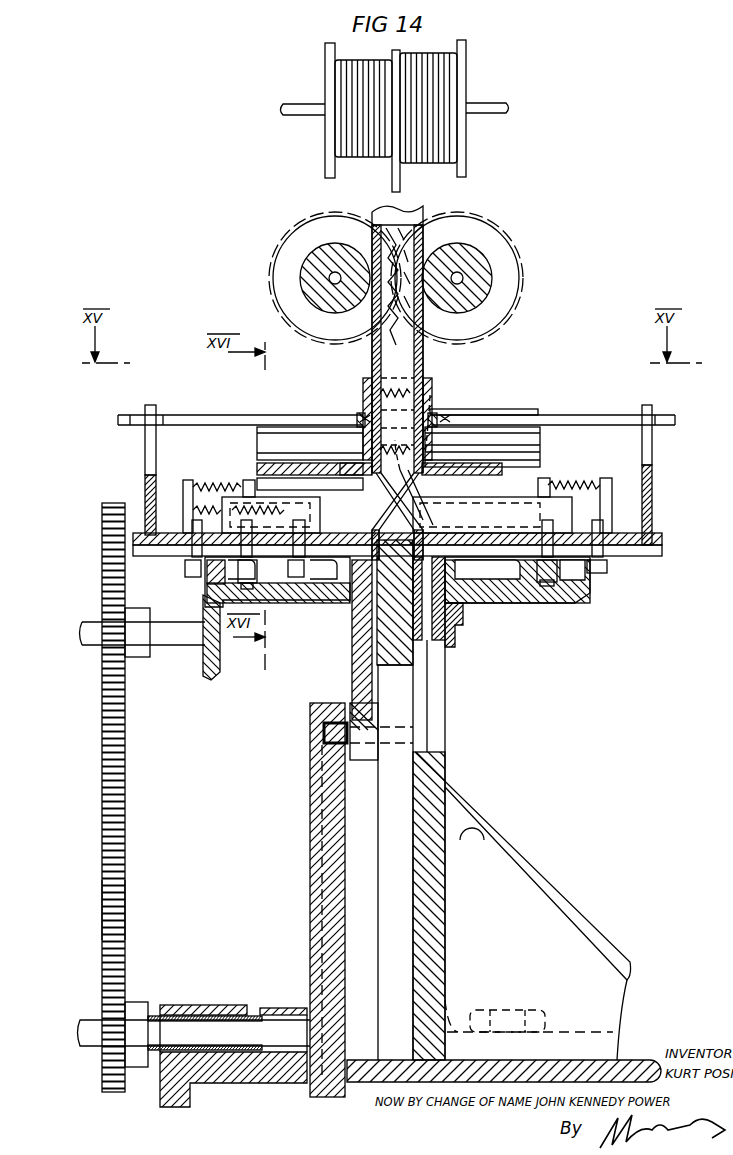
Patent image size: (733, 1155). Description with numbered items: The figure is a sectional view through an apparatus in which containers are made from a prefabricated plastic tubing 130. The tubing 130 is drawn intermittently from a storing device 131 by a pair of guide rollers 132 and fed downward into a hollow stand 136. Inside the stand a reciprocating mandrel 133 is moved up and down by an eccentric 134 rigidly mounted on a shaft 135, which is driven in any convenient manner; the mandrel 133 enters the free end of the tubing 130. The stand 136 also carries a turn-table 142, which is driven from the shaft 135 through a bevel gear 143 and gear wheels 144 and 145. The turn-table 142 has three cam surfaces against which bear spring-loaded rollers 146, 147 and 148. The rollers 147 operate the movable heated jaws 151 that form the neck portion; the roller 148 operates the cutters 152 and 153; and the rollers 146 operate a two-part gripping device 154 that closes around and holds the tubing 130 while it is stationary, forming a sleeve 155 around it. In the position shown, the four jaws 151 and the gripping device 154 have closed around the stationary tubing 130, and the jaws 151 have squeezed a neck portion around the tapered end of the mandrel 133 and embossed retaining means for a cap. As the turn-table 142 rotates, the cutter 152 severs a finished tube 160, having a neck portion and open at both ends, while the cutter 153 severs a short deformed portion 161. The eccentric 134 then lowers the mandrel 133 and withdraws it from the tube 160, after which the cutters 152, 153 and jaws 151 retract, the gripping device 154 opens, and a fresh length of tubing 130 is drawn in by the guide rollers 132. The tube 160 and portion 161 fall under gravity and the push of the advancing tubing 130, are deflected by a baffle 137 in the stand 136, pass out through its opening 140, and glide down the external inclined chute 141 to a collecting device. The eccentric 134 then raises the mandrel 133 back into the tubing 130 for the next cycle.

The prefabricated tubing 130 is at (395, 181).
The storing device 131 is at (464, 70).
The guide rollers 132 is at (326, 268).
The reciprocating mandrel 133 is at (400, 689).
The eccentric 134 is at (312, 848).
The shaft 135 is at (92, 1040).
The hollow stand 136 is at (350, 660).
The baffle 137 is at (324, 731).
The opening 140 is at (435, 732).
The inclined chute 141 is at (528, 870).
The turn-table 142 is at (515, 585).
The bevel gear 143 is at (215, 578).
The gear wheel 144 is at (104, 733).
The gear wheel 145 is at (101, 908).
The rollers 146 is at (196, 562).
The rollers 147 is at (212, 590).
The roller 148 is at (305, 572).
The movable jaws 151 is at (330, 460).
The cutter 152 is at (430, 420).
The cutter 153 is at (430, 400).
The gripping device 154 is at (272, 415).
The sleeve 155 is at (458, 354).
The finished tube 160 is at (442, 627).
The short portion 161 is at (418, 490).